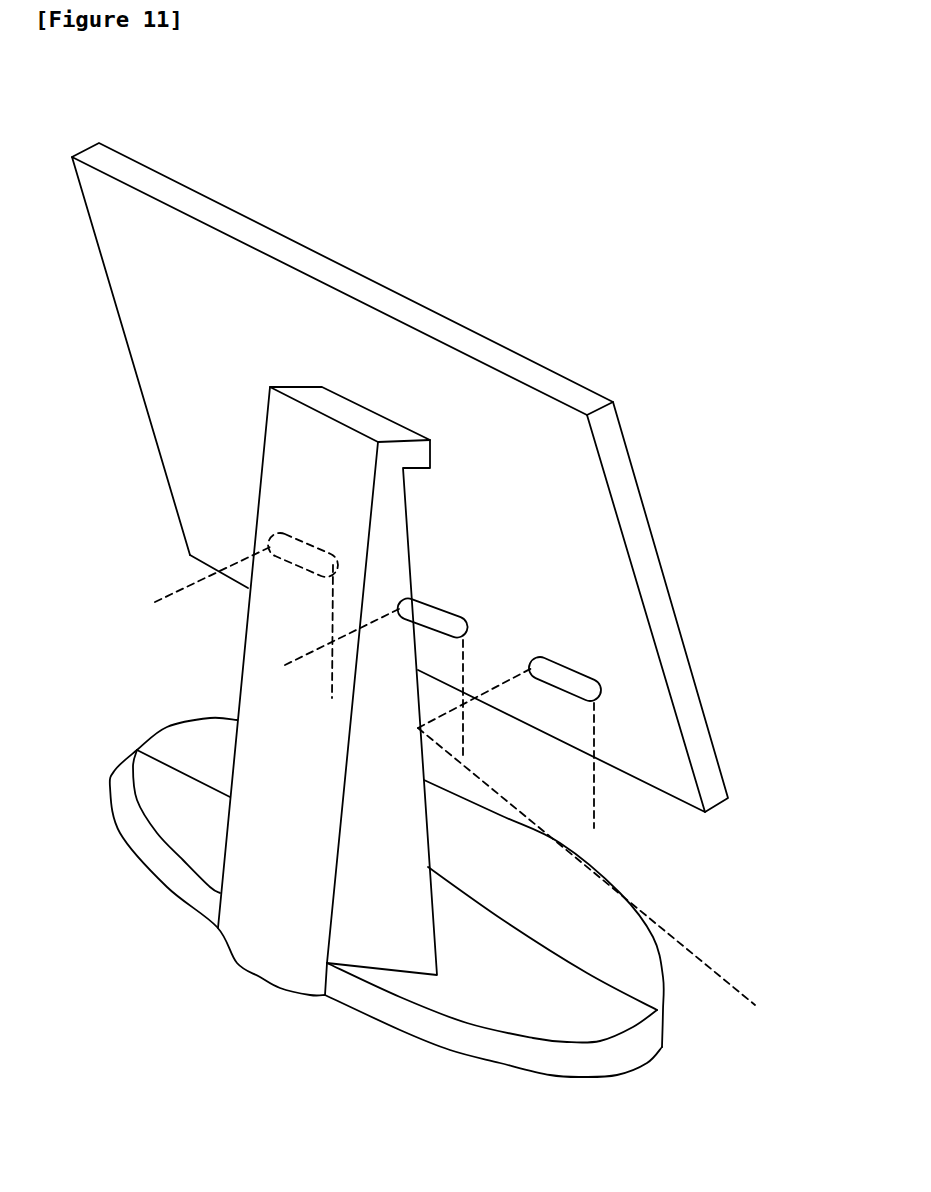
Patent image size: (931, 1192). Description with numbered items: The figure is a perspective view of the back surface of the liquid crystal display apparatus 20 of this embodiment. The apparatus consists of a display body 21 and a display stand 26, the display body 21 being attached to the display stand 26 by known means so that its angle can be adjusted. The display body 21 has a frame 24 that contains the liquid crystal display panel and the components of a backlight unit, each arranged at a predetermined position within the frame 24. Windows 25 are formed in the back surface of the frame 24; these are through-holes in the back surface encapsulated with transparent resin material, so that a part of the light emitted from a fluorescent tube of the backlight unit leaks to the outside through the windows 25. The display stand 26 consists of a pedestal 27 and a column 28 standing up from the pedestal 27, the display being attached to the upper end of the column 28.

The liquid crystal display apparatus 20 is at (604, 294).
The display body 21 is at (646, 508).
The frame 24 is at (677, 598).
The windows 25 is at (273, 557).
The display stand 26 is at (167, 985).
The pedestal 27 is at (463, 1042).
The column 28 is at (250, 960).